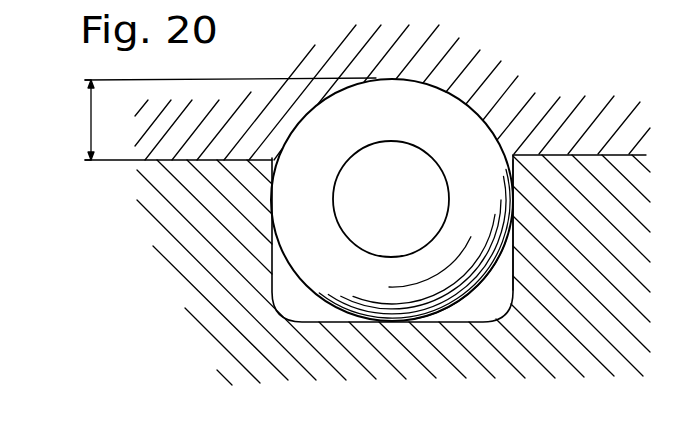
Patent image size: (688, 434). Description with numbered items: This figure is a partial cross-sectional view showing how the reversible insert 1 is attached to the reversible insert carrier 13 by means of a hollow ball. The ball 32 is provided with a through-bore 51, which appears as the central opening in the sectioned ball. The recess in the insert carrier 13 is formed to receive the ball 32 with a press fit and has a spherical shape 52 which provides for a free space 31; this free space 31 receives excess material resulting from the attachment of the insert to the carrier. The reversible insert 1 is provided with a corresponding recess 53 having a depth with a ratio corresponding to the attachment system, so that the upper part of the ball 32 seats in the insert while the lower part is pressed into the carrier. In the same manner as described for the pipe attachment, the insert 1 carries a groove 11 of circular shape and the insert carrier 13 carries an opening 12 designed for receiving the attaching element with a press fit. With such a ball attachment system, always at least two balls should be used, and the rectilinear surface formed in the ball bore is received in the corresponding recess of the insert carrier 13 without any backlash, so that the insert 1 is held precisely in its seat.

The reversible insert 1 is at (588, 128).
The groove 11 is at (357, 84).
The opening 12 is at (322, 322).
The reversible insert carrier 13 is at (530, 345).
The free space 31 is at (493, 285).
The ball 32 is at (451, 118).
The through-bore 51 is at (358, 222).
The spherical shape 52 is at (520, 210).
The recess 53 is at (91, 120).